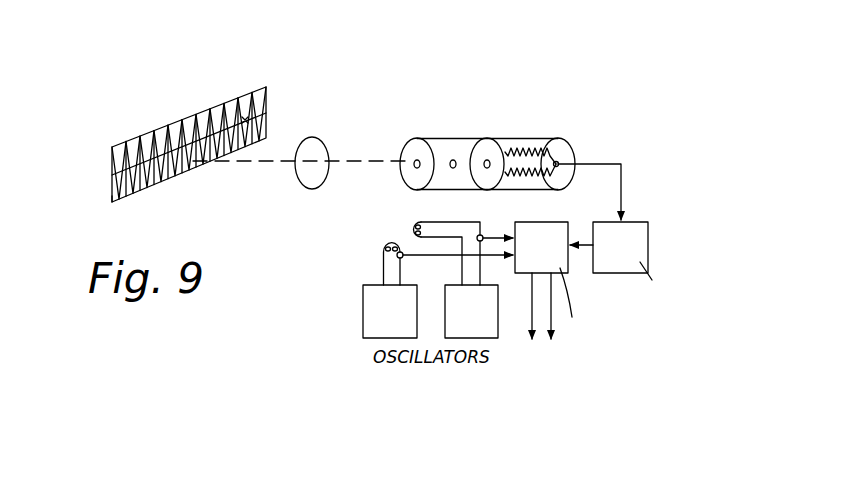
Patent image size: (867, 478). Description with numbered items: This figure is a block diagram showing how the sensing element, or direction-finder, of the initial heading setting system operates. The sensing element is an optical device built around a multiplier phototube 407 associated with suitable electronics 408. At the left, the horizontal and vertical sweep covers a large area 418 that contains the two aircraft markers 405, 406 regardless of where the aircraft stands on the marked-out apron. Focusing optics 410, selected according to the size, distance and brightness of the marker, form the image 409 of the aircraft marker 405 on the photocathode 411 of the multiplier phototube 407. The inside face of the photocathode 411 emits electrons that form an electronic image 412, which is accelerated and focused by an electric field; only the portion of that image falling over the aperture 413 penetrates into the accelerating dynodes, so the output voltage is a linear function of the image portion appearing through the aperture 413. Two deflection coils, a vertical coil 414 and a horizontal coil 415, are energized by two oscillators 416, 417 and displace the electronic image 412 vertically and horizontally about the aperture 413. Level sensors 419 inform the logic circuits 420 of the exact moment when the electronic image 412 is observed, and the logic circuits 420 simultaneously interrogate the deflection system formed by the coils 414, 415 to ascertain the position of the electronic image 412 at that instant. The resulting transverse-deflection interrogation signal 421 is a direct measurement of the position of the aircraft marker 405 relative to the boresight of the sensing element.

The aircraft marker 405 is at (145, 155).
The aircraft marker 406 is at (245, 118).
The large area 418 is at (112, 198).
The focusing optics 410 is at (337, 120).
The image 409 is at (416, 163).
The photocathode 411 is at (432, 141).
The electronic image 412 is at (454, 161).
The aperture 413 is at (490, 161).
The multiplier phototube 407 is at (558, 160).
The electronics 408 is at (633, 191).
The level sensors 419 is at (663, 261).
The logic circuits 420 is at (611, 279).
The transverse-deflection interrogation signal 421 is at (537, 315).
The oscillator 417 is at (402, 347).
The oscillator 416 is at (468, 347).
The vertical coil 414 is at (413, 230).
The horizontal coil 415 is at (381, 249).